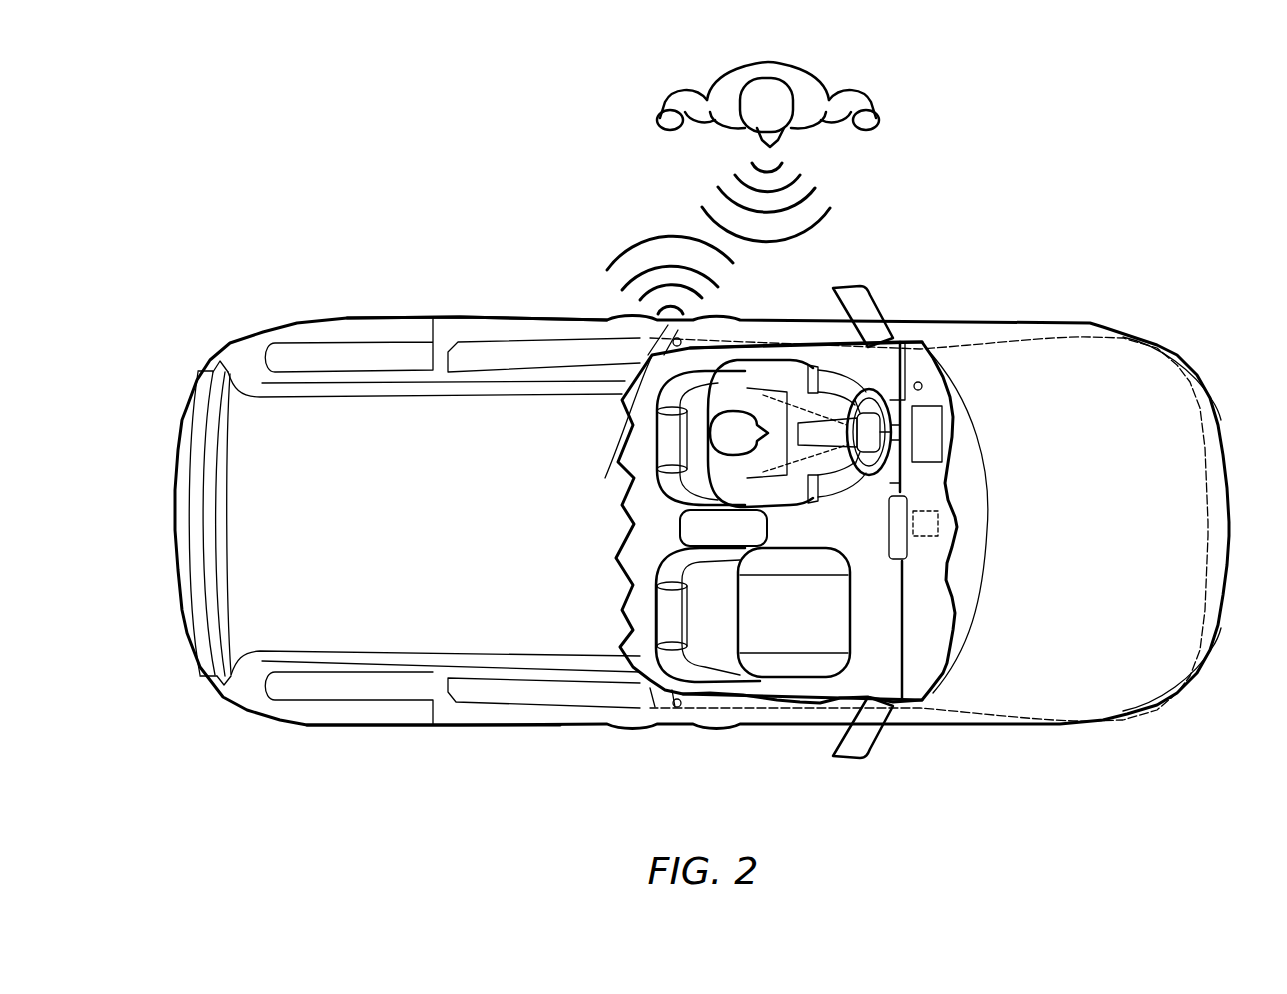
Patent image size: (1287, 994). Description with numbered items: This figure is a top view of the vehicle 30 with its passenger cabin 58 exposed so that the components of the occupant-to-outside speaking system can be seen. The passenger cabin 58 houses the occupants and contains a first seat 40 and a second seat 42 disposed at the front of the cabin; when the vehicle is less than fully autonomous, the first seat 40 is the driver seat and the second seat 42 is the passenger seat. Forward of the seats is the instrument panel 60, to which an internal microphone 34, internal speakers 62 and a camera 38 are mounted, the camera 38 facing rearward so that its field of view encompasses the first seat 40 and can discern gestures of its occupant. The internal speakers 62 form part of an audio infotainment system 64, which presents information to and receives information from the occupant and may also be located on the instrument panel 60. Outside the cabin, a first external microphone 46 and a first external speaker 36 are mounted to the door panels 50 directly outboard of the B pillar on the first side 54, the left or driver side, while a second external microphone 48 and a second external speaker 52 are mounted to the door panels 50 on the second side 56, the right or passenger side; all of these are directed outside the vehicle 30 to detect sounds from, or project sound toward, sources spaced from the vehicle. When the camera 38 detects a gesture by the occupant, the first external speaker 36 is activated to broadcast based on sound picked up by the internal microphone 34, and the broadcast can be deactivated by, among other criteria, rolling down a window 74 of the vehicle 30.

The vehicle 30 is at (418, 129).
The internal microphone 34 is at (923, 385).
The first external speaker 36 is at (626, 410).
The camera 38 is at (943, 438).
The first seat 40 is at (636, 470).
The second seat 42 is at (655, 572).
The first external microphone 46 is at (682, 342).
The second external microphone 48 is at (678, 715).
The door panels 50 is at (702, 366).
The second external speaker 52 is at (674, 708).
The first side 54 is at (548, 318).
The second side 56 is at (527, 735).
The passenger cabin 58 is at (646, 510).
The instrument panel 60 is at (930, 617).
The internal speakers 62 is at (939, 522).
The audio infotainment system 64 is at (908, 550).
The window 74 is at (802, 346).